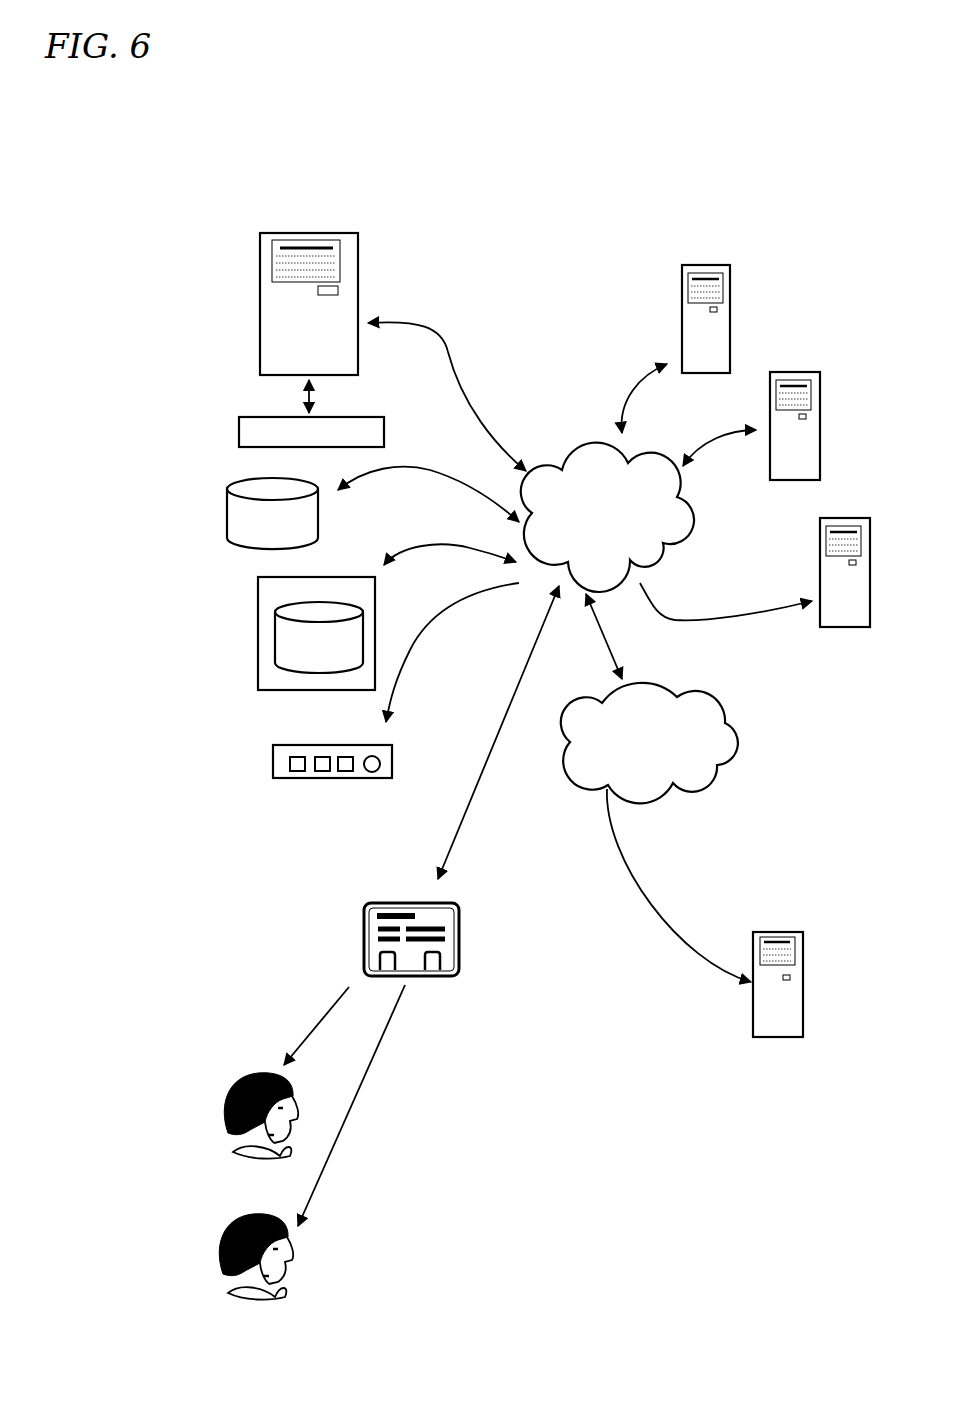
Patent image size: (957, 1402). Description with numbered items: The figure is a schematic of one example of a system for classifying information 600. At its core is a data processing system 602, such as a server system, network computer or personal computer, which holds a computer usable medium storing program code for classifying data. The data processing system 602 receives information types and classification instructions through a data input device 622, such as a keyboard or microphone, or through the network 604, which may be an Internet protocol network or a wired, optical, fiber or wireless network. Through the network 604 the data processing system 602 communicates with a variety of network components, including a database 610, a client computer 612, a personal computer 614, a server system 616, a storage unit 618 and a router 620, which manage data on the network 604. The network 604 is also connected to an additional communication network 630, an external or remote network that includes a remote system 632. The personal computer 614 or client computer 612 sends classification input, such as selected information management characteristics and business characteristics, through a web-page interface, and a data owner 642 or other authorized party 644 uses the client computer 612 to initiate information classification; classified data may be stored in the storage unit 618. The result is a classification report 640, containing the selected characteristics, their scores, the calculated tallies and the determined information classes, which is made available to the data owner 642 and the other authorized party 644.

The system for classifying information 600 is at (180, 220).
The data processing system 602 is at (309, 304).
The network 604 is at (607, 517).
The database 610 is at (272, 513).
The client computer 612 is at (845, 572).
The personal computer 614 is at (706, 319).
The server system 616 is at (795, 426).
The storage unit 618 is at (316, 633).
The router 620 is at (392, 775).
The data input device 622 is at (311, 432).
The additional communication network 630 is at (649, 743).
The remote system 632 is at (778, 984).
The classification report 640 is at (460, 948).
The data owner 642 is at (210, 1108).
The other authorized party 644 is at (212, 1240).